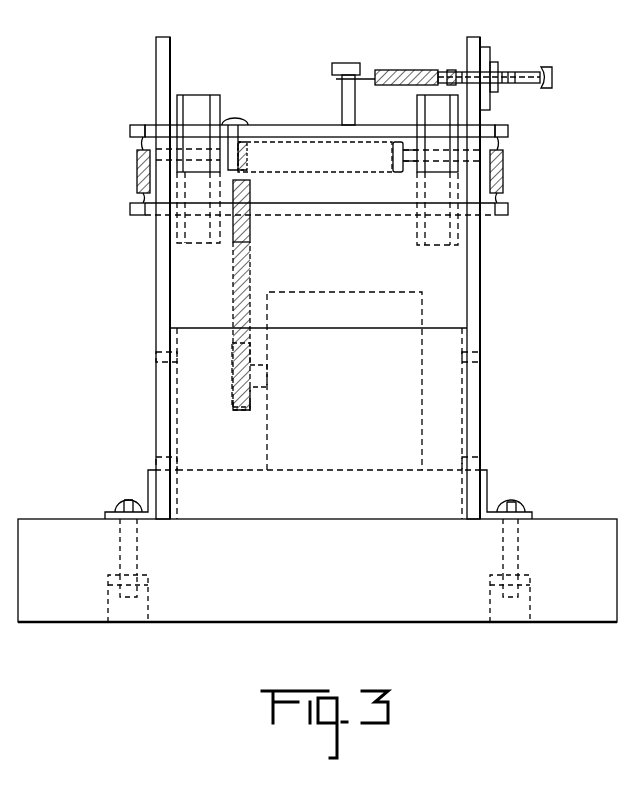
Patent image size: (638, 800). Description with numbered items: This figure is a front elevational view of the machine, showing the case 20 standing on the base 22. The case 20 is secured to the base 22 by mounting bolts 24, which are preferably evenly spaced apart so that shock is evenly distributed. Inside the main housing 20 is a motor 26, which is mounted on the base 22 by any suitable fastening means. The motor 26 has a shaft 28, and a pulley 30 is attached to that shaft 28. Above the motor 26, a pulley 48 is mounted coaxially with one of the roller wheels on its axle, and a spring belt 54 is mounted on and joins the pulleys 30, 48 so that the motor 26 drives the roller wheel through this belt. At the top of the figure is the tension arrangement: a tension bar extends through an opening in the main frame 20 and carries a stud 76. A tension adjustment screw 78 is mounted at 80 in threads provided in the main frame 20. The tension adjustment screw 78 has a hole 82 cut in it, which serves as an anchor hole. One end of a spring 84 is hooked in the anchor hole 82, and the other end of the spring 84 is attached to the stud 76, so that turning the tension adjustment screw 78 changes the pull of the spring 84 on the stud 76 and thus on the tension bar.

The case 20 is at (165, 300).
The base 22 is at (56, 612).
The mounting bolts 24 is at (122, 505).
The motor 26 is at (410, 314).
The shaft 28 is at (265, 380).
The pulley 30 is at (233, 404).
The pulley 48 is at (250, 195).
The spring belt 54 is at (240, 181).
The stud 76 is at (343, 101).
The tension adjustment screw 78 is at (523, 88).
The mounting location of tension adjustment screw 80 is at (483, 47).
The hole 82 is at (450, 70).
The spring 84 is at (398, 70).